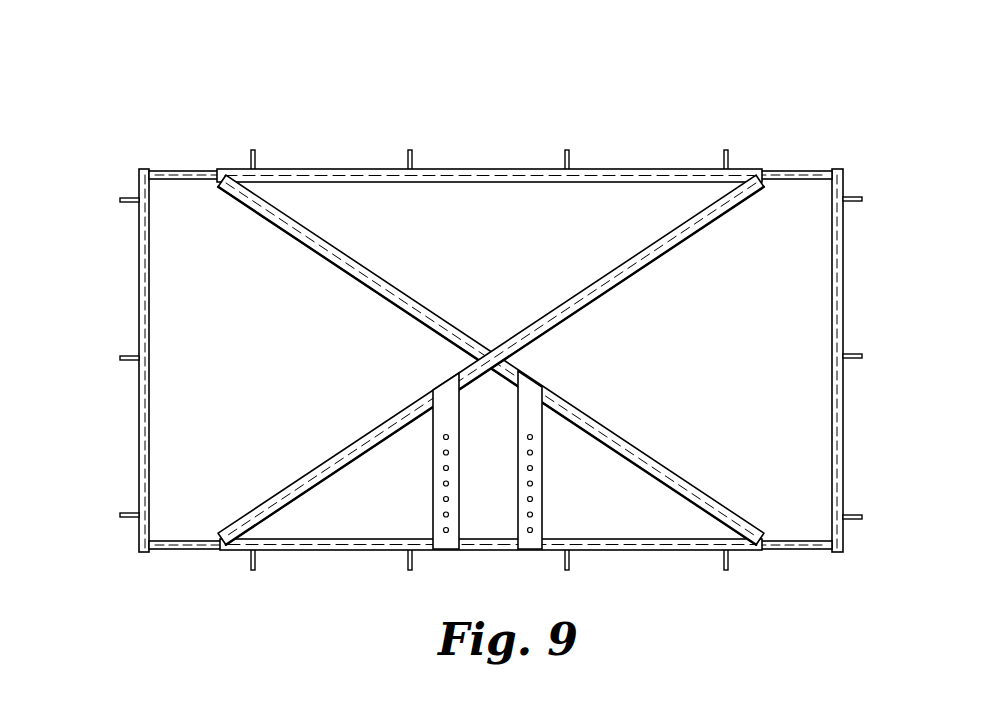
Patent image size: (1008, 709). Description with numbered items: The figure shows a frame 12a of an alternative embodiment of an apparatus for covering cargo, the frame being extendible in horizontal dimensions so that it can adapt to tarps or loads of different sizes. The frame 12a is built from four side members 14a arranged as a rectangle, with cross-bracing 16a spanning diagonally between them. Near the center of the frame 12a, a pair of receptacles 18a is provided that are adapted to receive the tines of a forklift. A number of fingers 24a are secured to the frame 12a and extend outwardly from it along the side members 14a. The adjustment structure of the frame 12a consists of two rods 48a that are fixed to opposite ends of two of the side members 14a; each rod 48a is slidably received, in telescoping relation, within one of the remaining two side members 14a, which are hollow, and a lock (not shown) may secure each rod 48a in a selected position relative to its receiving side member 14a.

The frame 12a is at (707, 111).
The side members 14a is at (492, 170).
The cross-bracing 16a is at (502, 340).
The receptacles 18a is at (528, 553).
The fingers 24a is at (133, 361).
The rods 48a is at (180, 170).